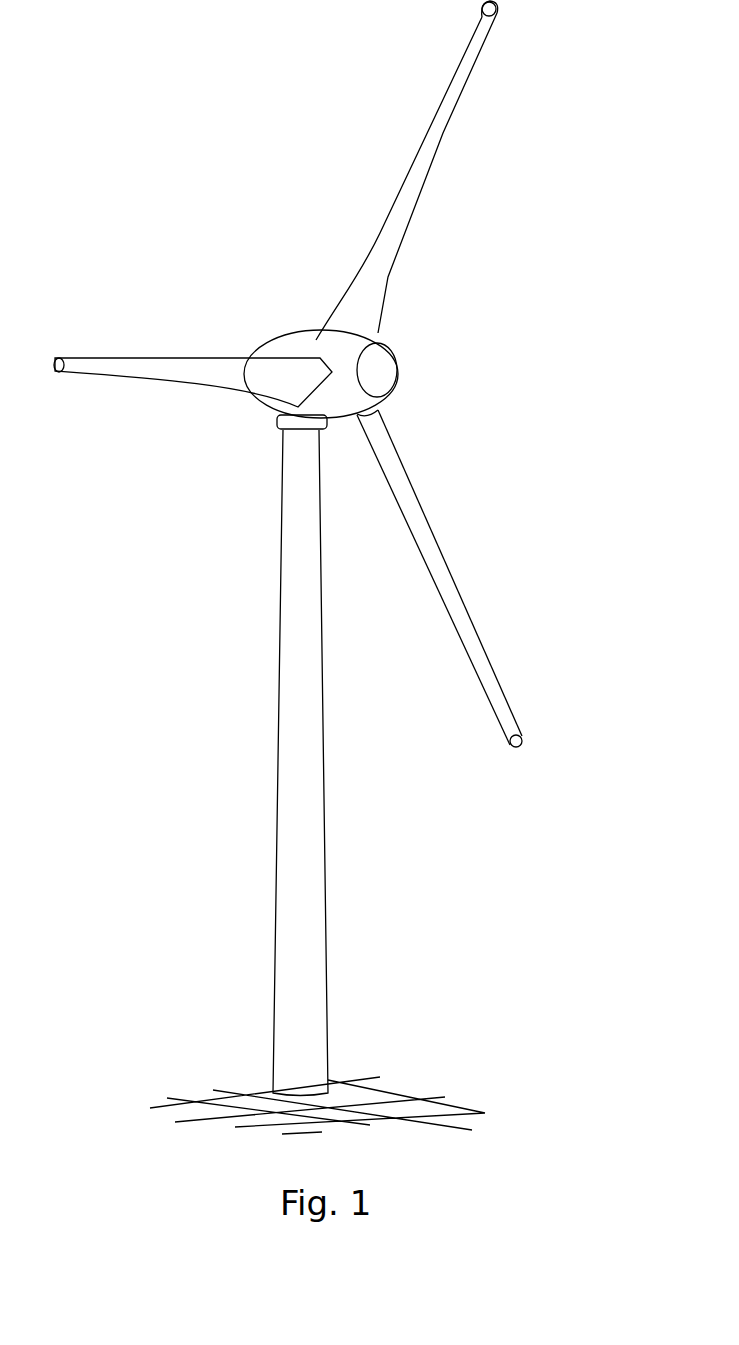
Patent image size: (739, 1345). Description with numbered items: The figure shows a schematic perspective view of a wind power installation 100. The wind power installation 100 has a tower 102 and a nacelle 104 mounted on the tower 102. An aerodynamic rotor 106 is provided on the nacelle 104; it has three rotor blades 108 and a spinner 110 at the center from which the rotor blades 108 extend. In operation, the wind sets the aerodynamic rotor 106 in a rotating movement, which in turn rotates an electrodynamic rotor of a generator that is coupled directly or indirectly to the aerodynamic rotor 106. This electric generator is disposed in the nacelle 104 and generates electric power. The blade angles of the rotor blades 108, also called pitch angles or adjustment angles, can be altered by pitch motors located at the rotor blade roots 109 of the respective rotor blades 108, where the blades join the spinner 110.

The wind power installation 100 is at (240, 497).
The tower 102 is at (308, 863).
The nacelle 104 is at (294, 344).
The aerodynamic rotor 106 is at (465, 297).
The rotor blade 108 is at (443, 128).
The rotor blade root 109 is at (383, 412).
The spinner 110 is at (381, 369).